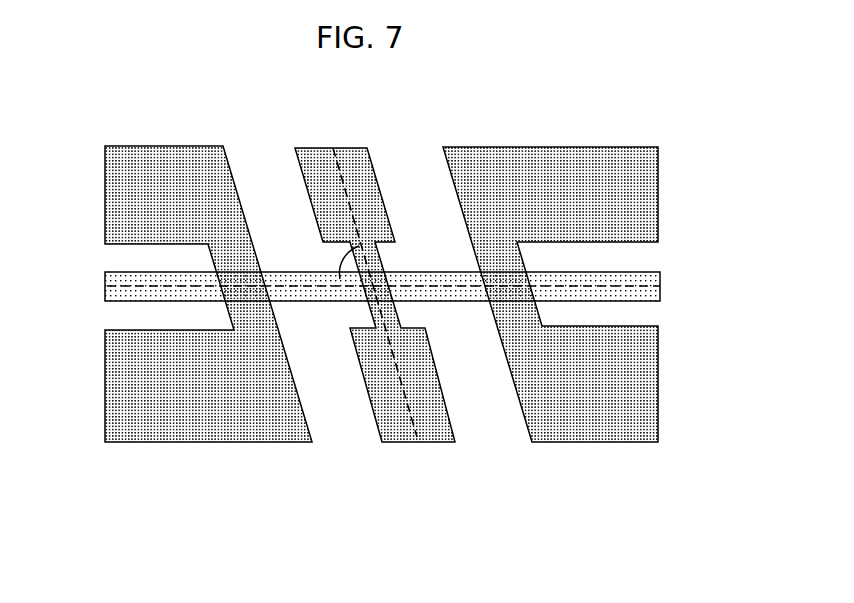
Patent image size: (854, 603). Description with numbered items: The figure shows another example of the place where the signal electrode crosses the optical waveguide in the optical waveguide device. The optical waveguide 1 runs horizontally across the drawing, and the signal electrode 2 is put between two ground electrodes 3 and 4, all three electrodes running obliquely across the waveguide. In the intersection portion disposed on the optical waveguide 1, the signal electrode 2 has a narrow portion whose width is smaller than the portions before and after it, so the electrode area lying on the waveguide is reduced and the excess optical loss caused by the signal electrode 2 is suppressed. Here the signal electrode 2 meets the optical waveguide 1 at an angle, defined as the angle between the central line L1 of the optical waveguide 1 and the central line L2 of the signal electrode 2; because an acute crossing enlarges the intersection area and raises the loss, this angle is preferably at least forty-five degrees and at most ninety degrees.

The optical waveguide 1 is at (648, 268).
The signal electrode 2 is at (438, 427).
The ground electrode 3 is at (257, 420).
The ground electrode 4 is at (632, 410).
The central line of the optical waveguide L1 is at (127, 287).
The central line of the signal electrode L2 is at (412, 415).